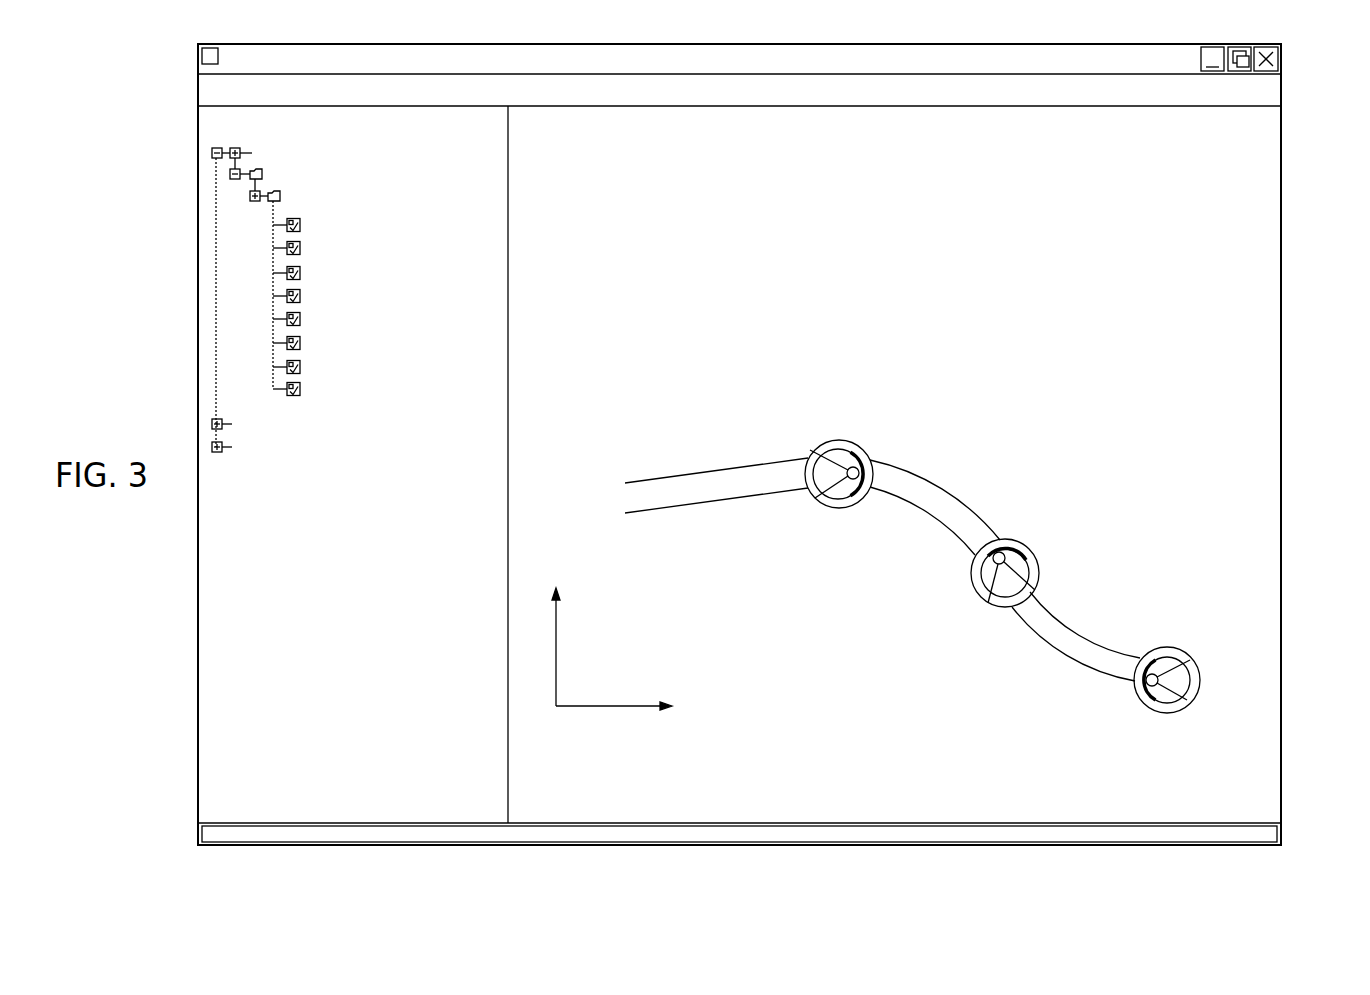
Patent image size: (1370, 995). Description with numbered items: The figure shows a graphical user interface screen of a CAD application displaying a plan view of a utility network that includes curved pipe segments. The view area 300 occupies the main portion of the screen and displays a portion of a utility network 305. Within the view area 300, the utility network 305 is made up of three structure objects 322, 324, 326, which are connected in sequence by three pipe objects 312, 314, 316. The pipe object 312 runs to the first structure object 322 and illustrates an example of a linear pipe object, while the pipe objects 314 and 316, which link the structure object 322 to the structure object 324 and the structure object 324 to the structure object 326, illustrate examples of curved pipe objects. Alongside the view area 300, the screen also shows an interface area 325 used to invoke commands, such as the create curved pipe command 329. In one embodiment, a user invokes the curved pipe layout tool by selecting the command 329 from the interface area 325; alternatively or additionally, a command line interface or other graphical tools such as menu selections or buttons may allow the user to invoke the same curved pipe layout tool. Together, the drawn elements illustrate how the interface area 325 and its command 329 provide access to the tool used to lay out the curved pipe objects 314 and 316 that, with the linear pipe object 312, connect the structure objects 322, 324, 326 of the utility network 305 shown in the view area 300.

The view area 300 is at (1282, 202).
The utility network 305 is at (1003, 336).
The pipe object 312 is at (716, 468).
The pipe object 314 is at (953, 488).
The pipe object 316 is at (1053, 655).
The structure object 322 is at (840, 439).
The structure object 324 is at (1033, 550).
The structure object 326 is at (1165, 648).
The interface area 325 is at (198, 53).
The create curved pipe command 329 is at (286, 296).